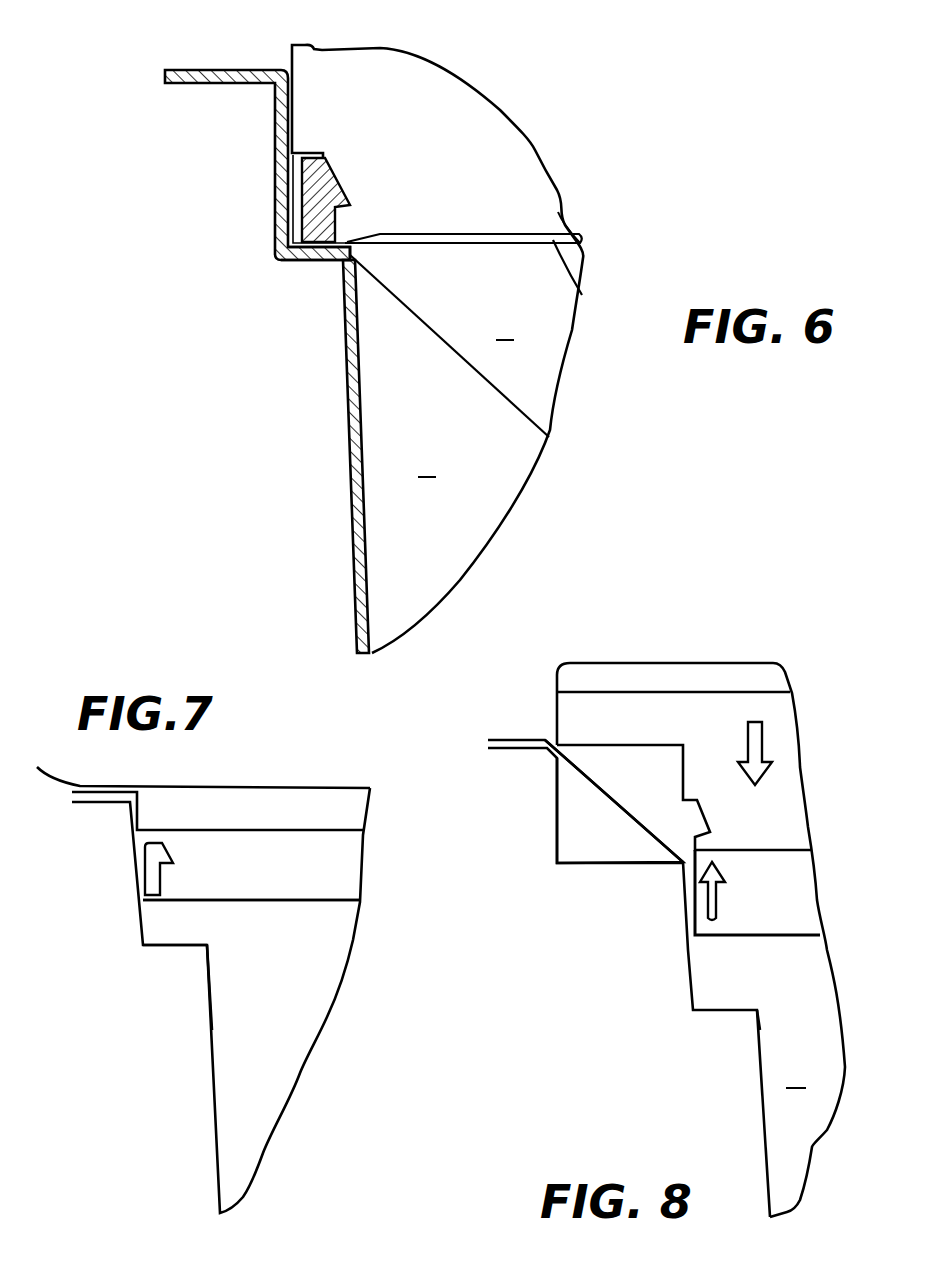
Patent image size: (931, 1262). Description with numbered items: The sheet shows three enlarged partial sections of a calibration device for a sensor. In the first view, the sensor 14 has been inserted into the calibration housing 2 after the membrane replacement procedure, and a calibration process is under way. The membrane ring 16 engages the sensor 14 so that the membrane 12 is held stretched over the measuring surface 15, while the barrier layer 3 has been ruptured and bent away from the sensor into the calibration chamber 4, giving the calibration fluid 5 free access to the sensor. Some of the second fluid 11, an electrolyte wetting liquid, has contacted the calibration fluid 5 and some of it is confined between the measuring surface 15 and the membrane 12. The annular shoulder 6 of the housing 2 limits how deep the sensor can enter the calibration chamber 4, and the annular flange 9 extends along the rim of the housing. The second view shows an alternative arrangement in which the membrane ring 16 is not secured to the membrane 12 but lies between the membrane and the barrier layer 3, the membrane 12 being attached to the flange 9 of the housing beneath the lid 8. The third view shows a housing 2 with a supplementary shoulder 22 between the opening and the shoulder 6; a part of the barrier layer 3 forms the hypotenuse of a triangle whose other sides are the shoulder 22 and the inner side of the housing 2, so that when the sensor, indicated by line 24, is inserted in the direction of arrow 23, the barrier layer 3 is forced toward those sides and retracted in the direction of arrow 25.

In FIG. 6, the calibration housing 2 is at (348, 476).
In FIG. 7, the calibration housing 2 is at (210, 1120).
In FIG. 8, the calibration housing 2 is at (768, 1206).
In FIG. 6, the barrier layer 3 is at (552, 430).
In FIG. 7, the barrier layer 3 is at (265, 903).
In FIG. 8, the barrier layer 3 is at (768, 937).
In FIG. 8, the calibration chamber 4 is at (786, 1130).
In FIG. 6, the calibration fluid 5 is at (466, 395).
In FIG. 8, the calibration fluid 5 is at (796, 1075).
In FIG. 6, the annular shoulder 6 is at (316, 262).
In FIG. 7, the annular shoulder 6 is at (190, 952).
In FIG. 8, the annular shoulder 6 is at (715, 1015).
In FIG. 7, the lid 8 is at (266, 788).
In FIG. 6, the annular flange 9 is at (218, 84).
In FIG. 7, the annular flange 9 is at (90, 804).
In FIG. 8, the annular flange 9 is at (517, 760).
In FIG. 6, the second fluid 11 is at (583, 252).
In FIG. 6, the membrane 12 is at (582, 296).
In FIG. 7, the membrane 12 is at (290, 835).
In FIG. 6, the sensor 14 is at (520, 148).
In FIG. 6, the measuring surface 15 is at (565, 226).
In FIG. 6, the membrane ring 16 is at (305, 188).
In FIG. 7, the membrane ring 16 is at (145, 887).
In FIG. 8, the supplementary shoulder 22 is at (607, 866).
In FIG. 8, the arrow 23 is at (760, 742).
In FIG. 8, the line 24 is at (803, 828).
In FIG. 8, the arrow 25 is at (725, 878).